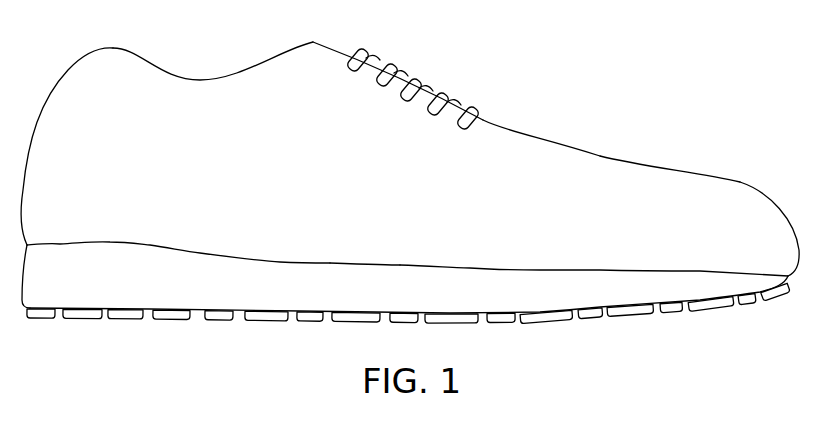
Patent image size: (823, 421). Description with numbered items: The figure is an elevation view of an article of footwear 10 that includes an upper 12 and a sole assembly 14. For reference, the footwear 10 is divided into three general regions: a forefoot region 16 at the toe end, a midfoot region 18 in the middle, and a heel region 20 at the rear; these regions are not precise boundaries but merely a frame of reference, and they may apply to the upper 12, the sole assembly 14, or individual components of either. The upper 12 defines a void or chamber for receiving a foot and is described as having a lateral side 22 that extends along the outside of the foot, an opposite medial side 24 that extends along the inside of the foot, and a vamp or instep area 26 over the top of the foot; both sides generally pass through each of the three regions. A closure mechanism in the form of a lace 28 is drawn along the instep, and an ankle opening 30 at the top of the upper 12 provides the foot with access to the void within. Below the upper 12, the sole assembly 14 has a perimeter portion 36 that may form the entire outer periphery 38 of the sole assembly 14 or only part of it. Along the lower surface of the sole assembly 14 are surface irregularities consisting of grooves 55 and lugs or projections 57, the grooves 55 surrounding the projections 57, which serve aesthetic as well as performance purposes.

The article of footwear 10 is at (676, 97).
The upper 12 is at (643, 181).
The sole assembly 14 is at (180, 248).
The forefoot region 16 is at (702, 229).
The midfoot region 18 is at (397, 174).
The heel region 20 is at (115, 148).
The lateral side 22 is at (455, 196).
The medial side 24 is at (602, 152).
The vamp or instep area 26 is at (535, 137).
The lace 28 is at (397, 65).
The ankle opening 30 is at (153, 72).
The perimeter portion 36 is at (252, 270).
The outer periphery 38 is at (538, 278).
The grooves 55 is at (106, 320).
The lugs or projections 57 is at (77, 322).